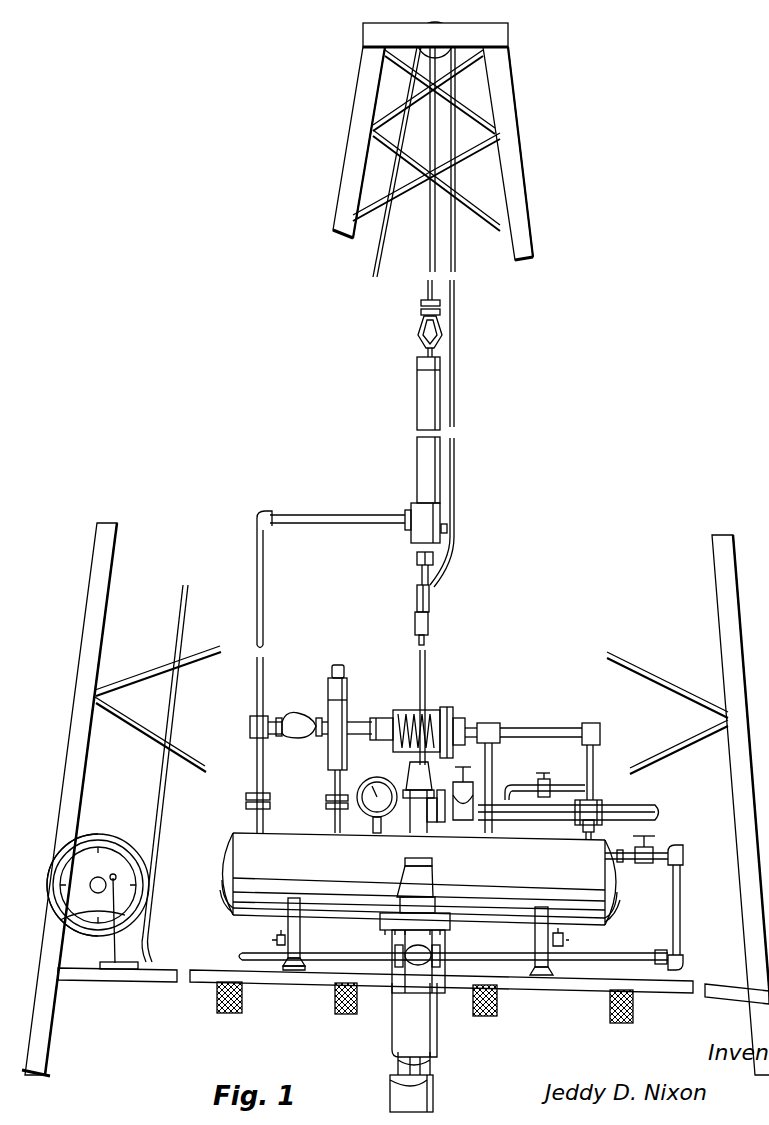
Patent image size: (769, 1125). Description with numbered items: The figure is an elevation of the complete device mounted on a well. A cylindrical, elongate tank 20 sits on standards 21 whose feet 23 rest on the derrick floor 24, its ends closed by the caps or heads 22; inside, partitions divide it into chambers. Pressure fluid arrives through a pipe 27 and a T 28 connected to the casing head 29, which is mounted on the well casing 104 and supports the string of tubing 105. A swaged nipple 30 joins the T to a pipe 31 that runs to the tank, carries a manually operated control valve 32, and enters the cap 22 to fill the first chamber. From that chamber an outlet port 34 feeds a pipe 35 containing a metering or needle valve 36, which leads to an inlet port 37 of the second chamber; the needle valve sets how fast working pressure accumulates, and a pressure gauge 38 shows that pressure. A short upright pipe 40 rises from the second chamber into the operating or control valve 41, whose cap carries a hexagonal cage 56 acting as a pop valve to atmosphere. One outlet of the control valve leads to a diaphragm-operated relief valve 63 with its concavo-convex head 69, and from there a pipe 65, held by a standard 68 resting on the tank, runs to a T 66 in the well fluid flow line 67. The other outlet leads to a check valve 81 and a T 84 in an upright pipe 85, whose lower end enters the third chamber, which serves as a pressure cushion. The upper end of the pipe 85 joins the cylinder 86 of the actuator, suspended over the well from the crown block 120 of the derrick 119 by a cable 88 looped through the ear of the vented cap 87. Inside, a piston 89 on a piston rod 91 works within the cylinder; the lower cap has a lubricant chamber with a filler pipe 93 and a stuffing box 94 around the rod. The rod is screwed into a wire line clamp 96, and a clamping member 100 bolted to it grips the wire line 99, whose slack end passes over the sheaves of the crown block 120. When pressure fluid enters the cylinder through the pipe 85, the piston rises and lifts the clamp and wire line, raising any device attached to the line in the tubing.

The tank 20 is at (287, 843).
The standards 21 is at (300, 934).
The cap or head 22 is at (618, 884).
The feet 23 is at (291, 972).
The derrick floor 24 is at (190, 985).
The pipe 27 is at (247, 950).
The T 28 is at (405, 968).
The casing head 29 is at (452, 931).
The swaged nipple 30 is at (450, 962).
The pipe 31 is at (681, 912).
The control valve 32 is at (655, 840).
The outlet port 34 is at (595, 829).
The pipe 35 is at (533, 786).
The metering or needle valve 36 is at (549, 782).
The inlet port 37 is at (508, 826).
The pressure gauge 38 is at (390, 778).
The upright pipe 40 is at (334, 774).
The operating or control valve 41 is at (349, 714).
The cage 56 is at (345, 670).
The relief valve 63 is at (444, 708).
The pipe 65 is at (500, 724).
The T 66 is at (590, 803).
The well fluid flow line 67 is at (645, 810).
The standard 68 is at (493, 756).
The concavo-convex cap or head 69 is at (460, 718).
The check valve 81 is at (306, 736).
The T 84 is at (250, 727).
The upright pipe 85 is at (362, 523).
The cylinder 86 is at (428, 462).
The vented cap 87 is at (417, 367).
The cable 88 is at (430, 247).
The piston or actuator 89 is at (411, 510).
The piston rod 91 is at (418, 574).
The filler pipe 93 is at (448, 529).
The stuffing box 94 is at (417, 557).
The wire line clamp 96 is at (430, 605).
The wire line 99 is at (373, 268).
The clamping member 100 is at (416, 624).
The well casing 104 is at (435, 1094).
The tubing 105 is at (432, 1065).
The derrick 119 is at (363, 101).
The crown block 120 is at (465, 28).